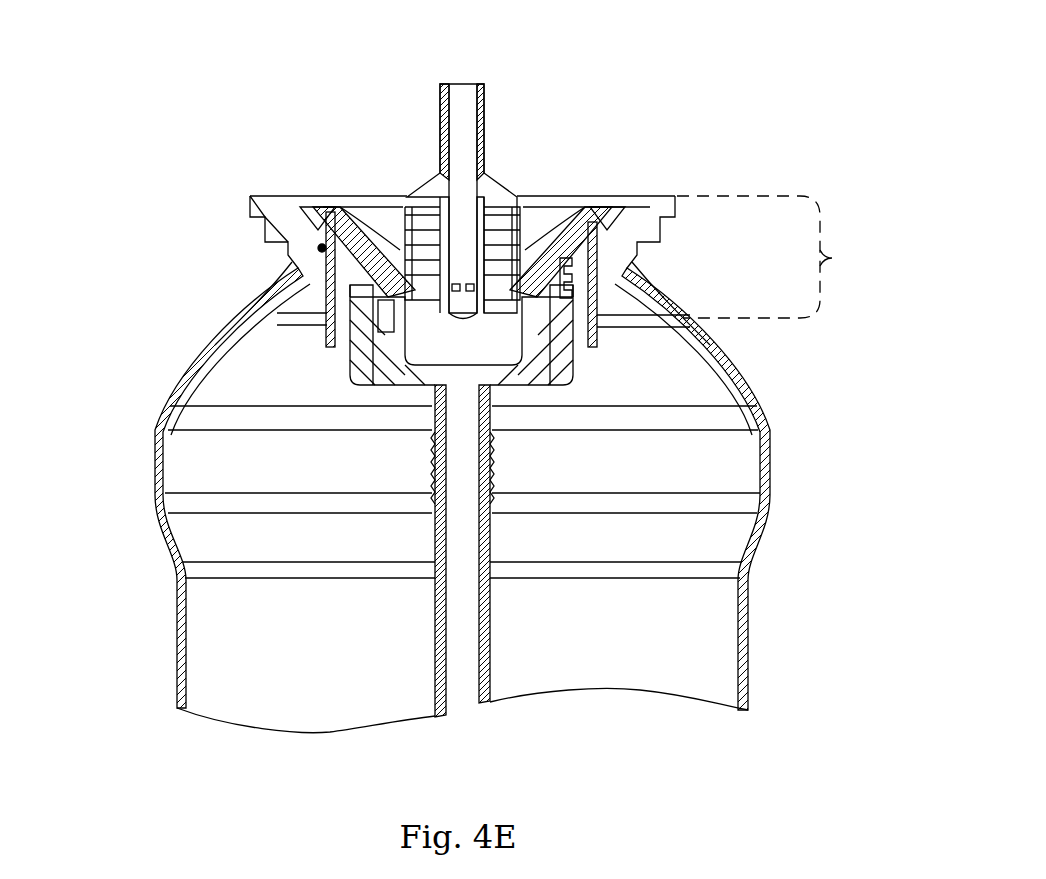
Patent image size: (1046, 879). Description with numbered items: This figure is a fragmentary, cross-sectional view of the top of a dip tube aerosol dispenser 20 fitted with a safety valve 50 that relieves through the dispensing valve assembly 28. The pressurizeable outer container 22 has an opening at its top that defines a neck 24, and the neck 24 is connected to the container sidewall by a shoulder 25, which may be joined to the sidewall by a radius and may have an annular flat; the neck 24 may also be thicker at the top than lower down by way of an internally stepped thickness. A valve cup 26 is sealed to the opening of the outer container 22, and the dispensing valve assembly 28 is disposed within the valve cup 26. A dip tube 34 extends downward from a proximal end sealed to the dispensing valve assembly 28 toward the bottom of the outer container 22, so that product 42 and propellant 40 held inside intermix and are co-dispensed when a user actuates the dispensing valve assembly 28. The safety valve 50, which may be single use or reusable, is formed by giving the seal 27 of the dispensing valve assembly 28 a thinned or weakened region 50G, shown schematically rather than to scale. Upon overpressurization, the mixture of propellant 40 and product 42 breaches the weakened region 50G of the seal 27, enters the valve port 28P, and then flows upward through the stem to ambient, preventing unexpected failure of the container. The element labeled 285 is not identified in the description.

The aerosol dispenser 20 is at (345, 155).
The outer container 22 is at (176, 647).
The neck 24 is at (290, 262).
The shoulder 25 is at (195, 365).
The valve cup 26 is at (290, 197).
The seal 27 is at (543, 262).
The dispensing valve assembly 28 is at (768, 257).
The valve port 28P is at (402, 233).
The tube 285 is at (458, 93).
The dip tube 34 is at (490, 595).
The propellant 40 is at (247, 693).
The product 42 is at (297, 710).
The safety valve 50 is at (590, 162).
The weakened region 50G is at (317, 230).